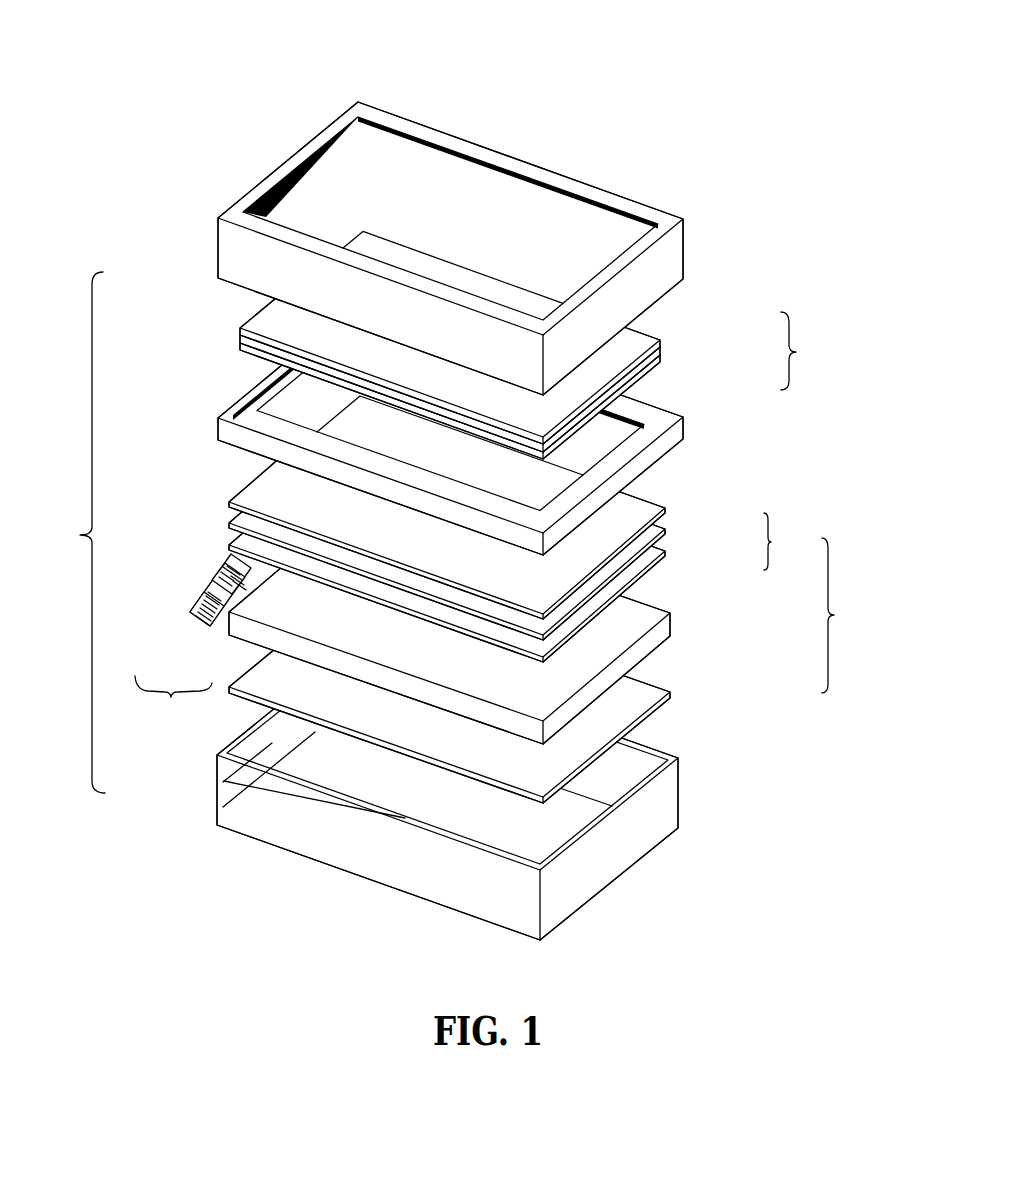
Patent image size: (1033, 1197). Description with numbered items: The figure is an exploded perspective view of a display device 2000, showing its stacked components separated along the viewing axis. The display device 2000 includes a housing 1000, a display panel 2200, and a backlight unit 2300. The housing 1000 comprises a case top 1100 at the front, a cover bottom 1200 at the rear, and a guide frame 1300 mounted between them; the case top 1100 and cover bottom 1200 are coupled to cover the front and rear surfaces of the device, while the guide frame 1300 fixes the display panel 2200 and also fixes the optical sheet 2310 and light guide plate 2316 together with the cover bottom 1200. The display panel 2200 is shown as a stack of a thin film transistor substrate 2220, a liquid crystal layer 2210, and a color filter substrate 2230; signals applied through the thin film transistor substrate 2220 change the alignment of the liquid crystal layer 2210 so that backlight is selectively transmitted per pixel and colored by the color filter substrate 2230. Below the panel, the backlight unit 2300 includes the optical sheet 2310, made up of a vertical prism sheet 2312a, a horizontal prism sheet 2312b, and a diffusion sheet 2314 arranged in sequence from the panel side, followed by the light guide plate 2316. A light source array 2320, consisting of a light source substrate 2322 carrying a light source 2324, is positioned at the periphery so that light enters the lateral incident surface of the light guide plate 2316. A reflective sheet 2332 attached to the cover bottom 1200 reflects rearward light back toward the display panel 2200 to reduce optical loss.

The display device 2000 is at (717, 65).
The housing 1000 is at (71, 532).
The case top 1100 is at (223, 250).
The cover bottom 1200 is at (217, 815).
The guide frame 1300 is at (230, 433).
The display panel 2200 is at (809, 351).
The thin film transistor substrate 2220 is at (660, 340).
The liquid crystal layer 2210 is at (660, 349).
The color filter substrate 2230 is at (660, 357).
The backlight unit 2300 is at (851, 615).
The optical sheet 2310 is at (788, 541).
The vertical prism sheet 2312a is at (668, 512).
The horizontal prism sheet 2312b is at (668, 538).
The diffusion sheet 2314 is at (668, 562).
The light guide plate 2316 is at (663, 633).
The light source array 2320 is at (173, 701).
The light source substrate 2322 is at (190, 620).
The light source 2324 is at (208, 622).
The reflective sheet 2332 is at (667, 697).